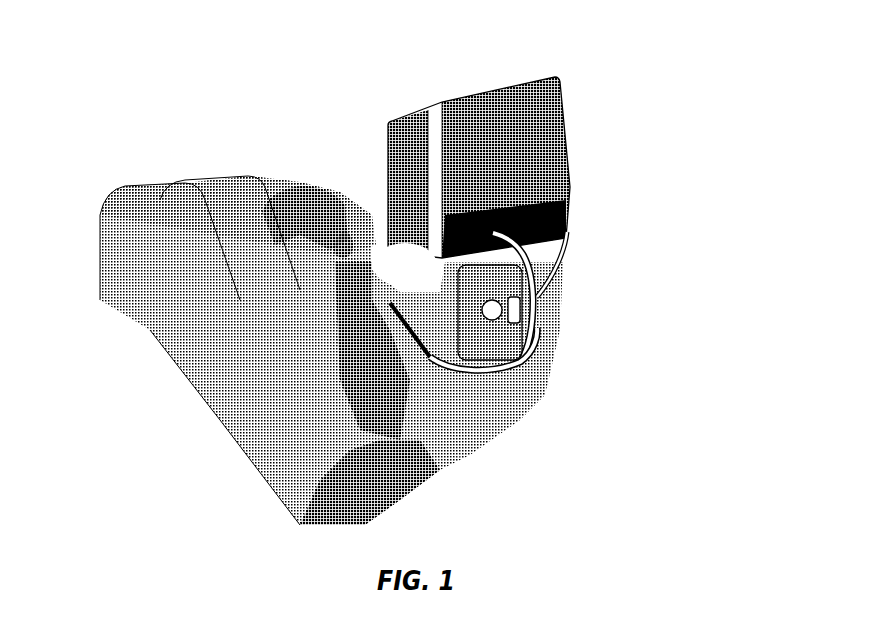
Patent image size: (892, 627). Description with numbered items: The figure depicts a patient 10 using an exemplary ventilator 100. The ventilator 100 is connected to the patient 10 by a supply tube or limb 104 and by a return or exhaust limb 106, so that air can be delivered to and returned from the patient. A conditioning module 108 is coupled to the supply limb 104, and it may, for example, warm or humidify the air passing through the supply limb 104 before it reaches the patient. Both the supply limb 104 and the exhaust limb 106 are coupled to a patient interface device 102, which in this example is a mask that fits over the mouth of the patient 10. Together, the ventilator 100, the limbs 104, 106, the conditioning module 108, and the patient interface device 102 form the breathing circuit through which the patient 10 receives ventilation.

The patient 10 is at (284, 160).
The ventilator 100 is at (512, 68).
The patient interface device 102 is at (345, 243).
The supply limb 104 is at (568, 243).
The exhaust limb 106 is at (534, 308).
The conditioning module 108 is at (538, 343).